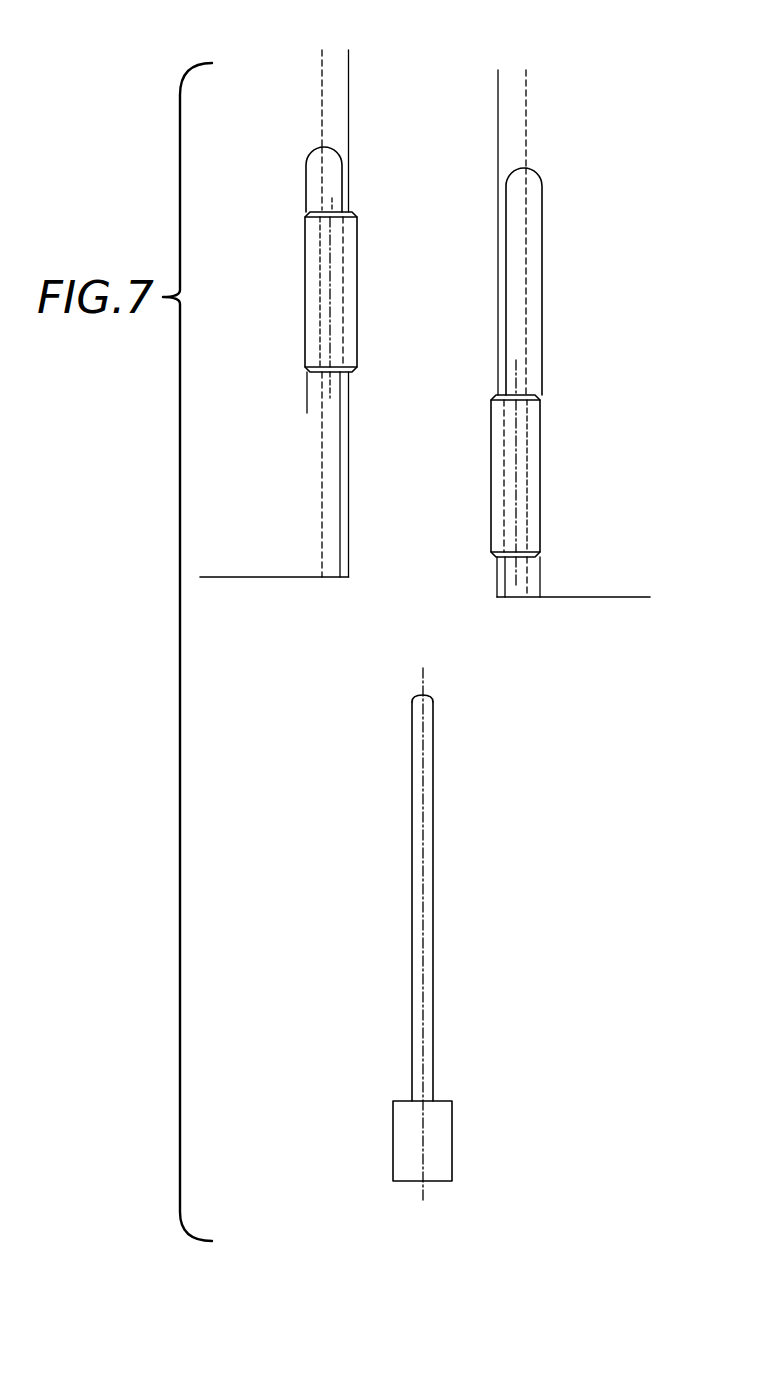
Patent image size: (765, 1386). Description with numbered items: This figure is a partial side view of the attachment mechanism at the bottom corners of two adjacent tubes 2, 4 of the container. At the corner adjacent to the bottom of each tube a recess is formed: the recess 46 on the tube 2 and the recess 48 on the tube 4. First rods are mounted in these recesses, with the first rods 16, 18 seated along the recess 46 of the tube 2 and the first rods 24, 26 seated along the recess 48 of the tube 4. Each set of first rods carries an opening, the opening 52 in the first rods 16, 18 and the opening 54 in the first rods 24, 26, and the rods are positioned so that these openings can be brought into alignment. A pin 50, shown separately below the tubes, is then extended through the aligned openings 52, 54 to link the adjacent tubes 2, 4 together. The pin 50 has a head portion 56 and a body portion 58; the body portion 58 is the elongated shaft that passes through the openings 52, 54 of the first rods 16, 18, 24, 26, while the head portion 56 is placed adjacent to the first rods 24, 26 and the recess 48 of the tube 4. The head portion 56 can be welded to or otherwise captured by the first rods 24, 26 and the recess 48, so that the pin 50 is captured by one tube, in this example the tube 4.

The tube 2 is at (262, 578).
The tube 4 is at (603, 598).
The first rod 16 is at (376, 292).
The first rod 18 is at (357, 280).
The first rod 24 is at (466, 478).
The first rod 26 is at (491, 505).
The recess 46 is at (333, 177).
The recess 48 is at (535, 575).
The pin 50 is at (513, 935).
The opening 52 is at (332, 372).
The opening 54 is at (515, 393).
The head portion 56 is at (452, 1148).
The body portion 58 is at (433, 805).